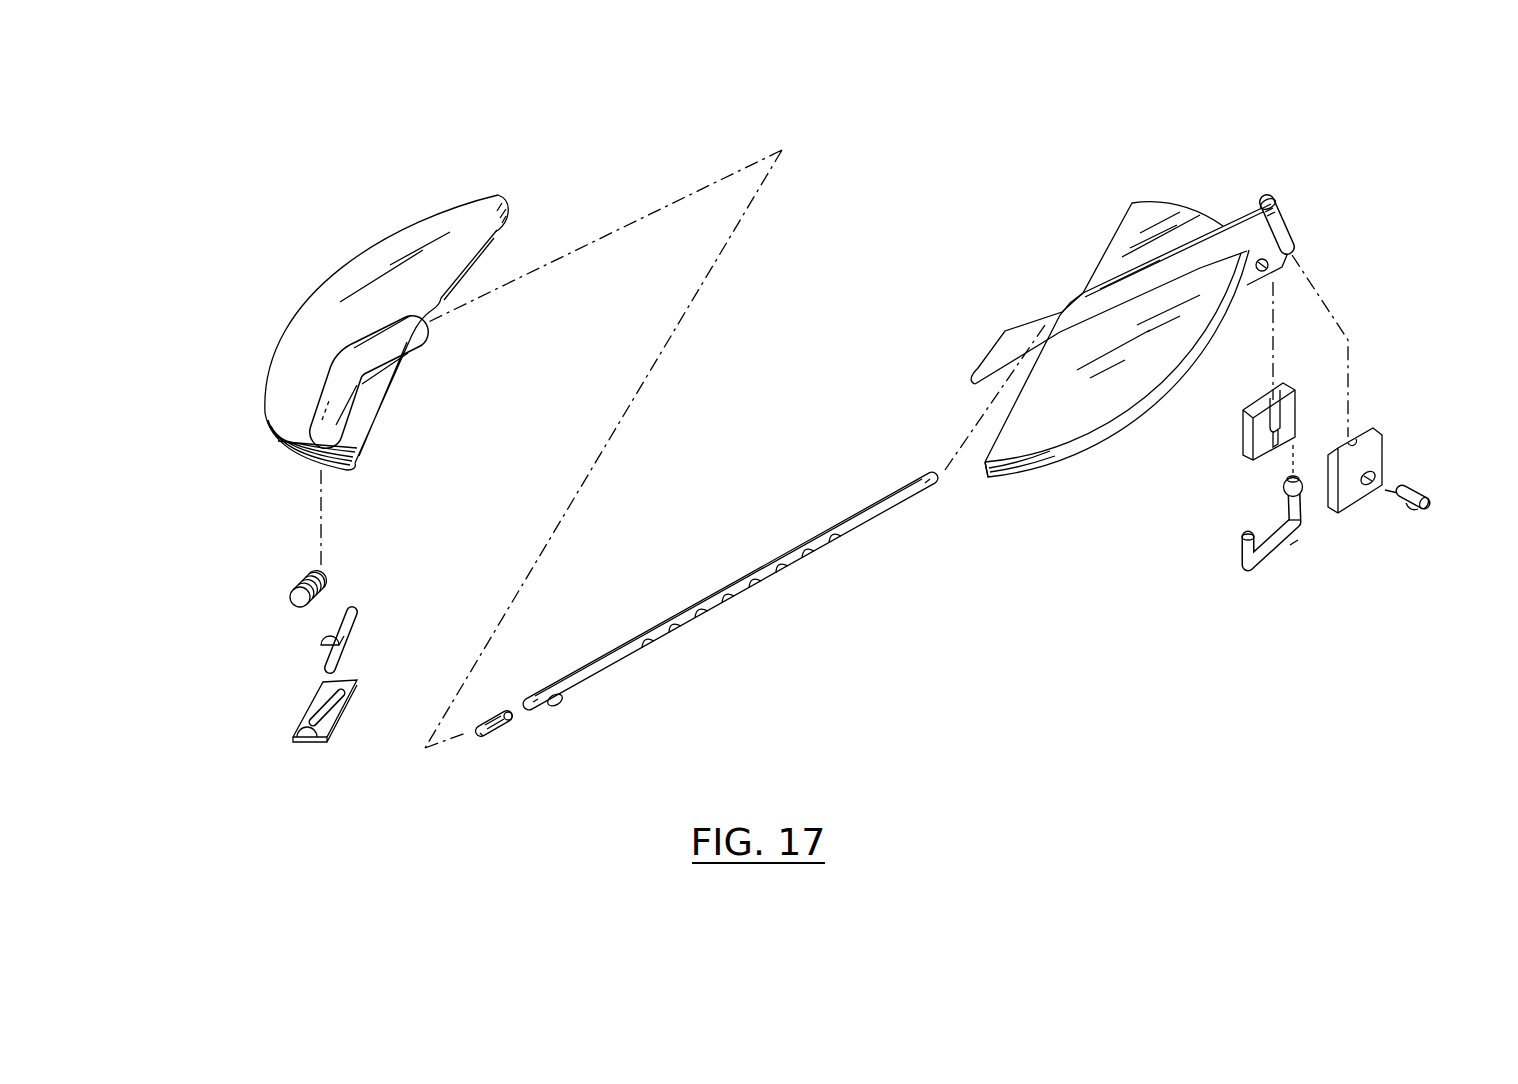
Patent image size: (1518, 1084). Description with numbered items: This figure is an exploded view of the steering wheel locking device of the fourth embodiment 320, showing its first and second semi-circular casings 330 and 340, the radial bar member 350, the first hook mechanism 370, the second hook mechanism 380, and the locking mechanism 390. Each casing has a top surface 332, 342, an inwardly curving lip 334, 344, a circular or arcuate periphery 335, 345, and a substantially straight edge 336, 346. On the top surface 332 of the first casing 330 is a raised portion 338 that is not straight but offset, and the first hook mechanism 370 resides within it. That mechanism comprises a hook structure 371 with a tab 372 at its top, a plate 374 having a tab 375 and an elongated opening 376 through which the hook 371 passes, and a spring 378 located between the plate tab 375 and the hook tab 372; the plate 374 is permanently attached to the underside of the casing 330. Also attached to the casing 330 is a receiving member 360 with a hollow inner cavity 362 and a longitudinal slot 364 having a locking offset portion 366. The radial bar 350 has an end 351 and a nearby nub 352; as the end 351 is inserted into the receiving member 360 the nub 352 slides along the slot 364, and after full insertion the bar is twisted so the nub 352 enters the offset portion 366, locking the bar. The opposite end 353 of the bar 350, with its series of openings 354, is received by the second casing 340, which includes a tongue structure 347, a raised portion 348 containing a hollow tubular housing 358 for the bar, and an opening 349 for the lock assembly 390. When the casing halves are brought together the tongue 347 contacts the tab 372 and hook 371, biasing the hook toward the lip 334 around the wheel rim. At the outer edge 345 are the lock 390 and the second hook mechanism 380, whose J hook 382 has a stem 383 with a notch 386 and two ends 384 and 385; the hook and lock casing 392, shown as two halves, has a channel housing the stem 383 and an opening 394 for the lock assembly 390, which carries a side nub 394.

The fourth embodiment 320 is at (853, 626).
The first semi-circular casing 330 is at (340, 293).
The top surface 332 is at (428, 256).
The inwardly curving lip 334 is at (508, 222).
The arcuate periphery 335 is at (385, 237).
The straight edge 336 is at (385, 395).
The raised portion 338 is at (335, 378).
The second semi-circular casing 340 is at (1152, 357).
The top surface 342 is at (1047, 425).
The inwardly curving lip 344 is at (1003, 478).
The arcuate periphery 345 is at (1125, 425).
The straight edge 346 is at (1152, 251).
The tongue structure 347 is at (992, 343).
The raised portion 348 is at (1160, 256).
The opening 349 is at (1300, 258).
The radial bar member 350 is at (730, 558).
The end of radial bar 351 is at (537, 692).
The nub 352 is at (558, 705).
The shaft distal end 353 is at (925, 473).
The holes 354 is at (757, 624).
The hollow tubular housing 358 is at (1281, 204).
The receiving member 360 is at (534, 732).
The hollow inner cavity 362 is at (508, 712).
The longitudinal slot 364 is at (508, 723).
The locking offset portion 366 is at (495, 730).
The first hook mechanism 370 is at (317, 599).
The hook structure 371 is at (352, 650).
The tab 372 is at (323, 645).
The plate 374 is at (285, 741).
The plate tab 375 is at (315, 732).
The elongated opening 376 is at (350, 700).
The spring 378 is at (290, 585).
The second hook mechanism 380 is at (1252, 576).
The J hook 382 is at (1273, 565).
The stem 383 is at (1290, 530).
The end of J hook 384 is at (1243, 540).
The end of J hook 385 is at (1283, 487).
The notch 386 is at (1303, 522).
The locking mechanism 390 is at (1428, 505).
The hook and lock casing 392 is at (1242, 410).
The opening 394 is at (1375, 495).